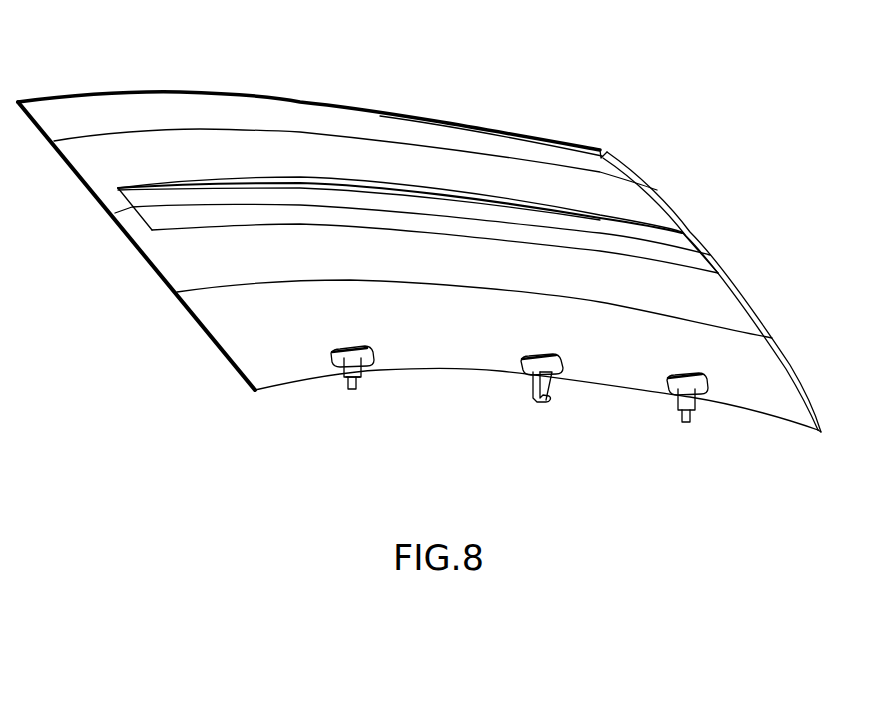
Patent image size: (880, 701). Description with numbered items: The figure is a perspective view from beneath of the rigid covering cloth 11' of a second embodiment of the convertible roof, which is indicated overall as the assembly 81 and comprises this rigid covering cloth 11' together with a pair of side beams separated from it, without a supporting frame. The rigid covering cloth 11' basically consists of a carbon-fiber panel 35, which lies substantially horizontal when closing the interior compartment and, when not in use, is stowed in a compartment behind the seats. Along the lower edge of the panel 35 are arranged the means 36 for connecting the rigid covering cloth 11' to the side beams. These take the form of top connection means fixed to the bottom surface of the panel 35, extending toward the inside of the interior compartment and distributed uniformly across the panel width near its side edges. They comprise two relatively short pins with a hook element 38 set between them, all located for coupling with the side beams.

The roof panel assembly 81 is at (419, 229).
The carbon-fiber panel 35 is at (405, 125).
The rigid covering cloth 11' is at (135, 286).
The means for connection 36 is at (325, 420).
The hook element 38 is at (543, 372).